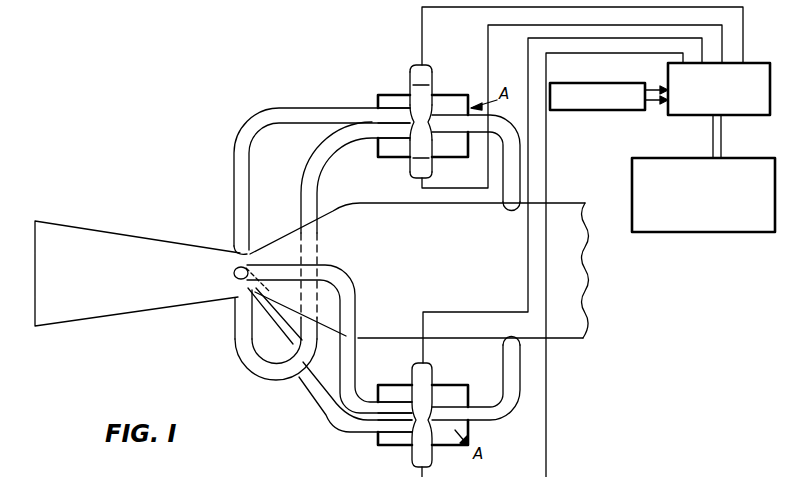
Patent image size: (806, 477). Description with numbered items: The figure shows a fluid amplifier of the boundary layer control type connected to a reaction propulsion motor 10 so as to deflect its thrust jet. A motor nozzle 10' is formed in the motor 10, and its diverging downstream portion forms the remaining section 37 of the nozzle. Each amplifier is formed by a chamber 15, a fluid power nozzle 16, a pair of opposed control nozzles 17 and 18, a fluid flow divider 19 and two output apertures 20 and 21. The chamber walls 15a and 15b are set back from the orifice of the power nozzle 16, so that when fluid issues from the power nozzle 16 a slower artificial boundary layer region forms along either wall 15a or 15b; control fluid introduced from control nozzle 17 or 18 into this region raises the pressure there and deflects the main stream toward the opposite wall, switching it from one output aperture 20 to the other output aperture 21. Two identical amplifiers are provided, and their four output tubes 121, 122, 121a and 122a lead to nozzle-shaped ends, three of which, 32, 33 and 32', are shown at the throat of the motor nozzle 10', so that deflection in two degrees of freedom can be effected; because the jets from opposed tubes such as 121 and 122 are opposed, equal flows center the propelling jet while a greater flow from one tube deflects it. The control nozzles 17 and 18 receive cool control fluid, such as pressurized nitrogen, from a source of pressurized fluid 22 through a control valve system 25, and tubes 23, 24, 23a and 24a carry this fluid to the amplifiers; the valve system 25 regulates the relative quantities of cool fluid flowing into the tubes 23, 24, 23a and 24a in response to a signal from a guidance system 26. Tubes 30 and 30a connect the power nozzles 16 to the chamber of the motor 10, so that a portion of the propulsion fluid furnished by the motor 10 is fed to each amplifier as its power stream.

The reaction propulsion motor 10 is at (419, 270).
The motor nozzle 10' is at (308, 267).
The chamber 15 is at (428, 108).
The chamber wall 15a is at (402, 100).
The chamber wall 15b is at (401, 148).
The fluid power nozzle 16 is at (458, 101).
The control nozzle 17 is at (431, 90).
The control nozzle 18 is at (433, 150).
The fluid flow divider 19 is at (398, 118).
The output aperture 20 is at (372, 140).
The output aperture 21 is at (375, 112).
The source of pressurized fluid 22 is at (697, 233).
The tube 23 is at (420, 22).
The tube 23a is at (455, 297).
The tube 24 is at (515, 25).
The tube 24a is at (546, 405).
The control valve system 25 is at (667, 76).
The guidance system 26 is at (612, 110).
The tube 30 is at (510, 173).
The tube 30a is at (508, 357).
The nozzle-shaped end 32 is at (223, 238).
The nozzle-shaped end 32' is at (221, 276).
The nozzle-shaped end 33 is at (240, 302).
The remaining section of the nozzle 37 is at (135, 240).
The output tube 121 is at (303, 114).
The output tube 121a is at (356, 308).
The output tube 122 is at (308, 180).
The output tube 122a is at (311, 397).